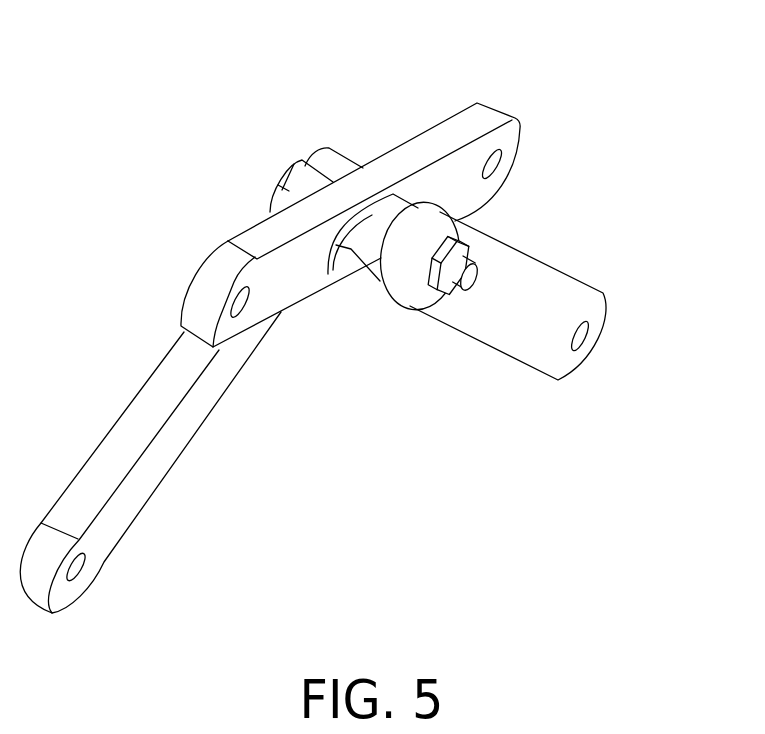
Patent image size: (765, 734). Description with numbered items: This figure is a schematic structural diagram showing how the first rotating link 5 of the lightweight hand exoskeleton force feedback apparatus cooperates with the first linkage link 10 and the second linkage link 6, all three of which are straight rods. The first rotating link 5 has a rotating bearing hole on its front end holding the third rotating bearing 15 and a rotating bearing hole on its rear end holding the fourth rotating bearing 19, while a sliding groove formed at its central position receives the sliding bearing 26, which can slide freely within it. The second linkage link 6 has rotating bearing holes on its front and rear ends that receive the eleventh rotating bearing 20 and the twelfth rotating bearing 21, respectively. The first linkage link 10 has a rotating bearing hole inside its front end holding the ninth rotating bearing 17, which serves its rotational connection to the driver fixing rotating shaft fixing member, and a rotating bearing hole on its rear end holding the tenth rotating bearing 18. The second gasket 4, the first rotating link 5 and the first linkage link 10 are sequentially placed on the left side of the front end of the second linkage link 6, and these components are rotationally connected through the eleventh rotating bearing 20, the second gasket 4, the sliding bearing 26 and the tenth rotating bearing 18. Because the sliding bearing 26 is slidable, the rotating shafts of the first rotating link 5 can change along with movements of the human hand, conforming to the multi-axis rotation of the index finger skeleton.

The second gasket 4 is at (371, 240).
The first rotating link 5 is at (427, 185).
The second linkage link 6 is at (505, 290).
The first linkage link 10 is at (148, 470).
The third rotating bearing 15 is at (239, 286).
The ninth rotating bearing 17 is at (72, 571).
The tenth rotating bearing 18 is at (302, 160).
The fourth rotating bearing 19 is at (503, 148).
The eleventh rotating bearing 20 is at (453, 248).
The twelfth rotating bearing 21 is at (593, 334).
The sliding bearing 26 is at (356, 230).